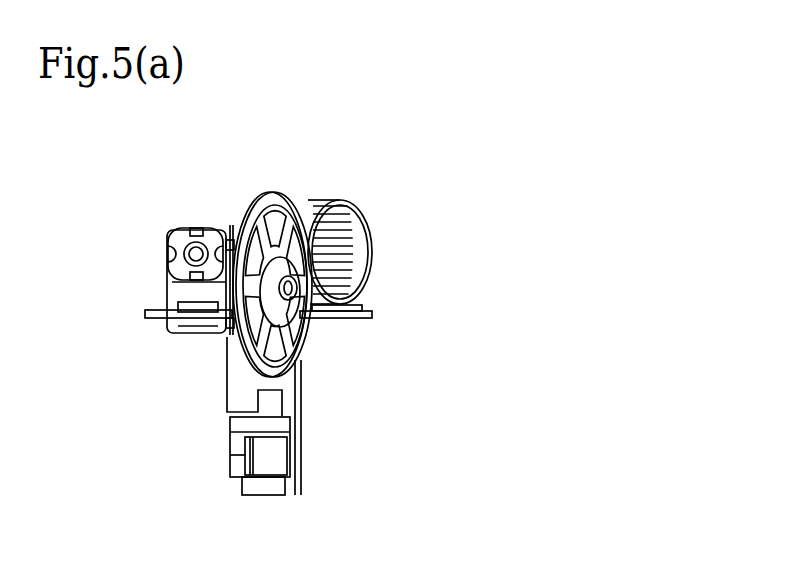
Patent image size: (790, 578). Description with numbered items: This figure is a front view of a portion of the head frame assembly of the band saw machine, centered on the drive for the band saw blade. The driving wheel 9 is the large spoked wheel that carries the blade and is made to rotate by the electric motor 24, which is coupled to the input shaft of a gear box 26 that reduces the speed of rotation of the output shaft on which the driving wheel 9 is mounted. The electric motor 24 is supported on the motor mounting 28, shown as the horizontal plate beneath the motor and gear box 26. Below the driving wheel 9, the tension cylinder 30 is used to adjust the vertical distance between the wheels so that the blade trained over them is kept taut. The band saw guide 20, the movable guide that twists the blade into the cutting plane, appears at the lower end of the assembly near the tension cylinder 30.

The driving wheel 9 is at (263, 196).
The band saw guide 20 is at (243, 460).
The electric motor 24 is at (365, 230).
The gear box 26 is at (203, 228).
The motor mounting 28 is at (373, 313).
The tension cylinder 30 is at (237, 377).